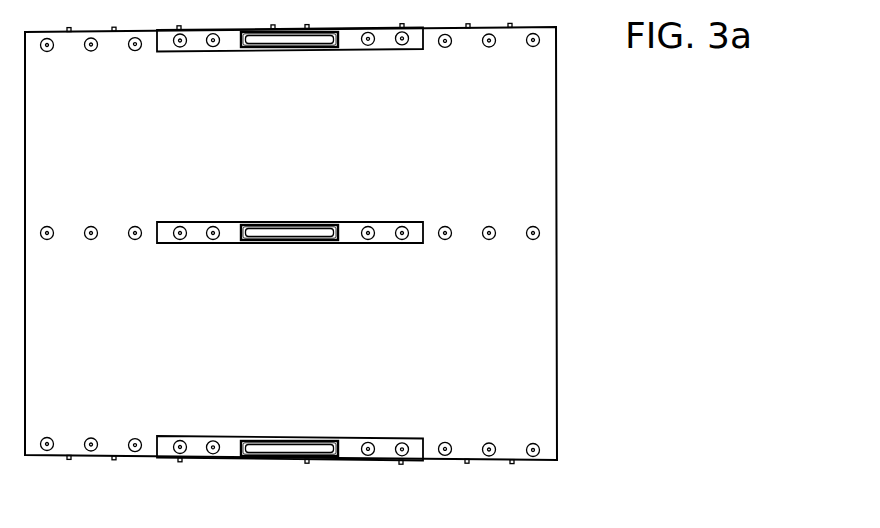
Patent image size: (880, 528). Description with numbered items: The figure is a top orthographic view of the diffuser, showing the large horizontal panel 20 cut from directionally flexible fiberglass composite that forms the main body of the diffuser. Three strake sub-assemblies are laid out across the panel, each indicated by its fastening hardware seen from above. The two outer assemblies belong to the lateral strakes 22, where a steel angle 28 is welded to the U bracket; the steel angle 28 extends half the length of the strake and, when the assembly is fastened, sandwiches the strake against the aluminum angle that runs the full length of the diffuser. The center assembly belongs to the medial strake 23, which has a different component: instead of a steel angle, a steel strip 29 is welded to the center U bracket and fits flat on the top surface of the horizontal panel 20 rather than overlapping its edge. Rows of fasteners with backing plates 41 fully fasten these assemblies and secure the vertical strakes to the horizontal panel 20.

The horizontal panel 20 is at (547, 127).
The lateral strakes 22 is at (290, 468).
The medial strake 23 is at (289, 250).
The steel angle 28 is at (385, 51).
The steel strip 29 is at (385, 244).
The backing plates 41 is at (533, 442).